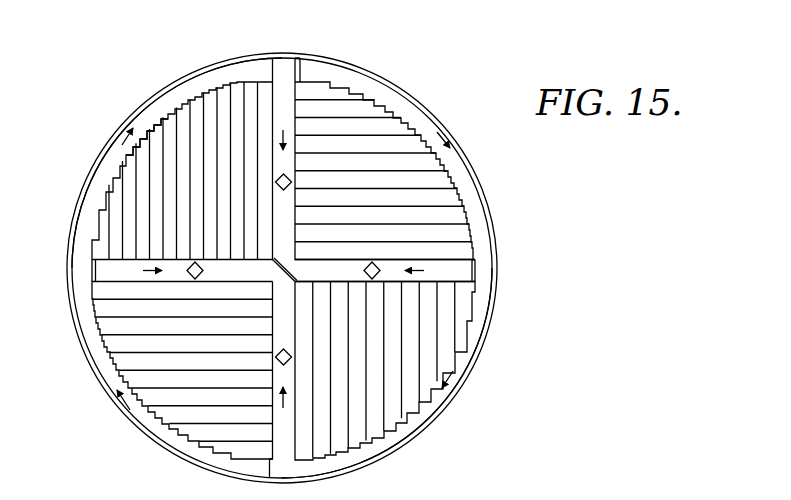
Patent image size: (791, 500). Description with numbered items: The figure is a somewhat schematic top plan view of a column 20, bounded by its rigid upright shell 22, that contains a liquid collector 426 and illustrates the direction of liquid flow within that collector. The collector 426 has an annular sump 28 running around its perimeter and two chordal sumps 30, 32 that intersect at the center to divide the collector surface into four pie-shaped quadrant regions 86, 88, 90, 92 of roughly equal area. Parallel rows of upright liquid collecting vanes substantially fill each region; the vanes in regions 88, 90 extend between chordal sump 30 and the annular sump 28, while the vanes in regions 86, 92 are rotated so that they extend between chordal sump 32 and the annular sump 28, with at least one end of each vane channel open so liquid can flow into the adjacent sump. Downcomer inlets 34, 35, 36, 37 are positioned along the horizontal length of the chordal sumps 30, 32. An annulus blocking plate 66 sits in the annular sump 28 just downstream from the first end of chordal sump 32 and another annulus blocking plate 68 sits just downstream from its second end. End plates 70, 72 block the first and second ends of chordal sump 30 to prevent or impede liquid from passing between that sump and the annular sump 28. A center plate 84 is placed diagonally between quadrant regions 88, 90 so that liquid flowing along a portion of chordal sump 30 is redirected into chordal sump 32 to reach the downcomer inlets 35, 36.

The column 20 is at (494, 186).
The shell 22 is at (457, 163).
The annular sump 28 is at (205, 80).
The chordal sump 30 is at (468, 277).
The chordal sump 32 is at (283, 90).
The downcomer inlet 34 is at (194, 262).
The downcomer inlet 35 is at (291, 357).
The downcomer inlet 36 is at (276, 182).
The downcomer inlet 37 is at (373, 262).
The annulus blocking plate 66 is at (301, 63).
The annulus blocking plate 68 is at (267, 470).
The end plate 70 is at (93, 272).
The end plate 72 is at (477, 270).
The center plate 84 is at (294, 277).
The quadrant region 86 is at (388, 109).
The quadrant region 88 is at (392, 412).
The quadrant region 90 is at (110, 186).
The quadrant region 92 is at (126, 360).
The collector 426 is at (153, 113).